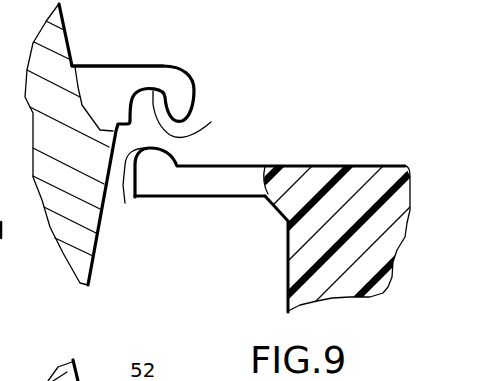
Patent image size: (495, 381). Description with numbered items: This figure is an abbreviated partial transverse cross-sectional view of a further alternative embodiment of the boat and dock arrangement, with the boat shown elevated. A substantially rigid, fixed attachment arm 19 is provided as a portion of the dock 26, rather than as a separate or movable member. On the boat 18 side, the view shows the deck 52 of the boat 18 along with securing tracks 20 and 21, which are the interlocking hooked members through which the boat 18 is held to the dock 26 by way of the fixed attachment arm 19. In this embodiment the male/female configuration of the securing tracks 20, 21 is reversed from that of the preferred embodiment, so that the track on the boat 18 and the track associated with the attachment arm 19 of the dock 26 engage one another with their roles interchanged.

The boat 18 is at (110, 98).
The deck 52 is at (100, 66).
The securing track 21 is at (196, 114).
The securing track 20 is at (130, 191).
The fixed attachment arm 19 is at (217, 166).
The dock 26 is at (375, 164).